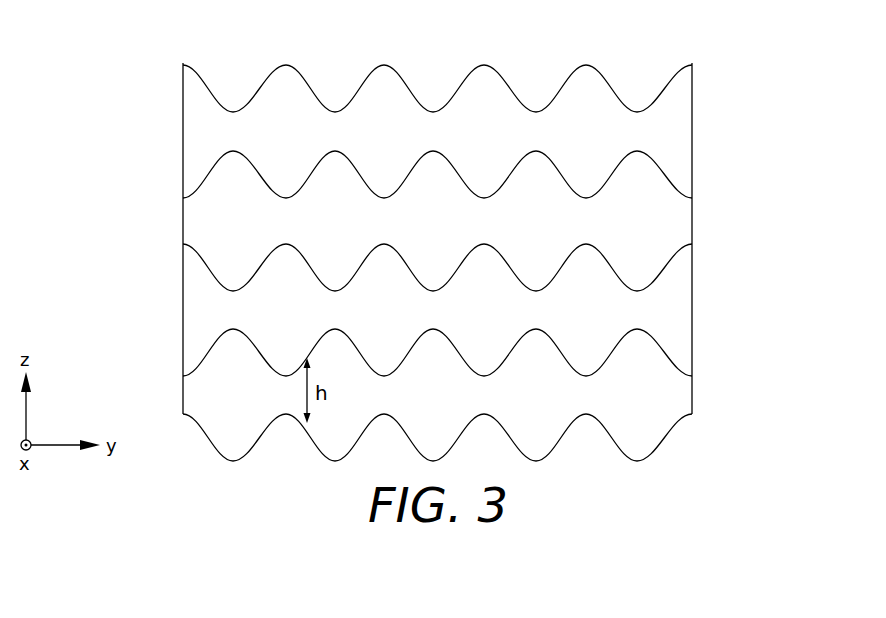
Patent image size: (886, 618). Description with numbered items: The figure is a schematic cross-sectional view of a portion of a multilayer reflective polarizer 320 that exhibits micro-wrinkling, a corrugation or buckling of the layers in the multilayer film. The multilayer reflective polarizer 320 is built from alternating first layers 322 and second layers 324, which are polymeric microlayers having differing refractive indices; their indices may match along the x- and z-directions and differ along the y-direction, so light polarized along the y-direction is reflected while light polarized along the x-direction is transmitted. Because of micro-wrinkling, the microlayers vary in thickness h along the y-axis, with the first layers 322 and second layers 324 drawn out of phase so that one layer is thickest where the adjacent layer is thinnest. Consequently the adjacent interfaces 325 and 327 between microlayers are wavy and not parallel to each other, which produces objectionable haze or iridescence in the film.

The multilayer reflective polarizer 320 is at (128, 73).
The first layers 322 is at (675, 142).
The second layers 324 is at (217, 238).
The interface 325 is at (260, 168).
The interface 327 is at (308, 267).